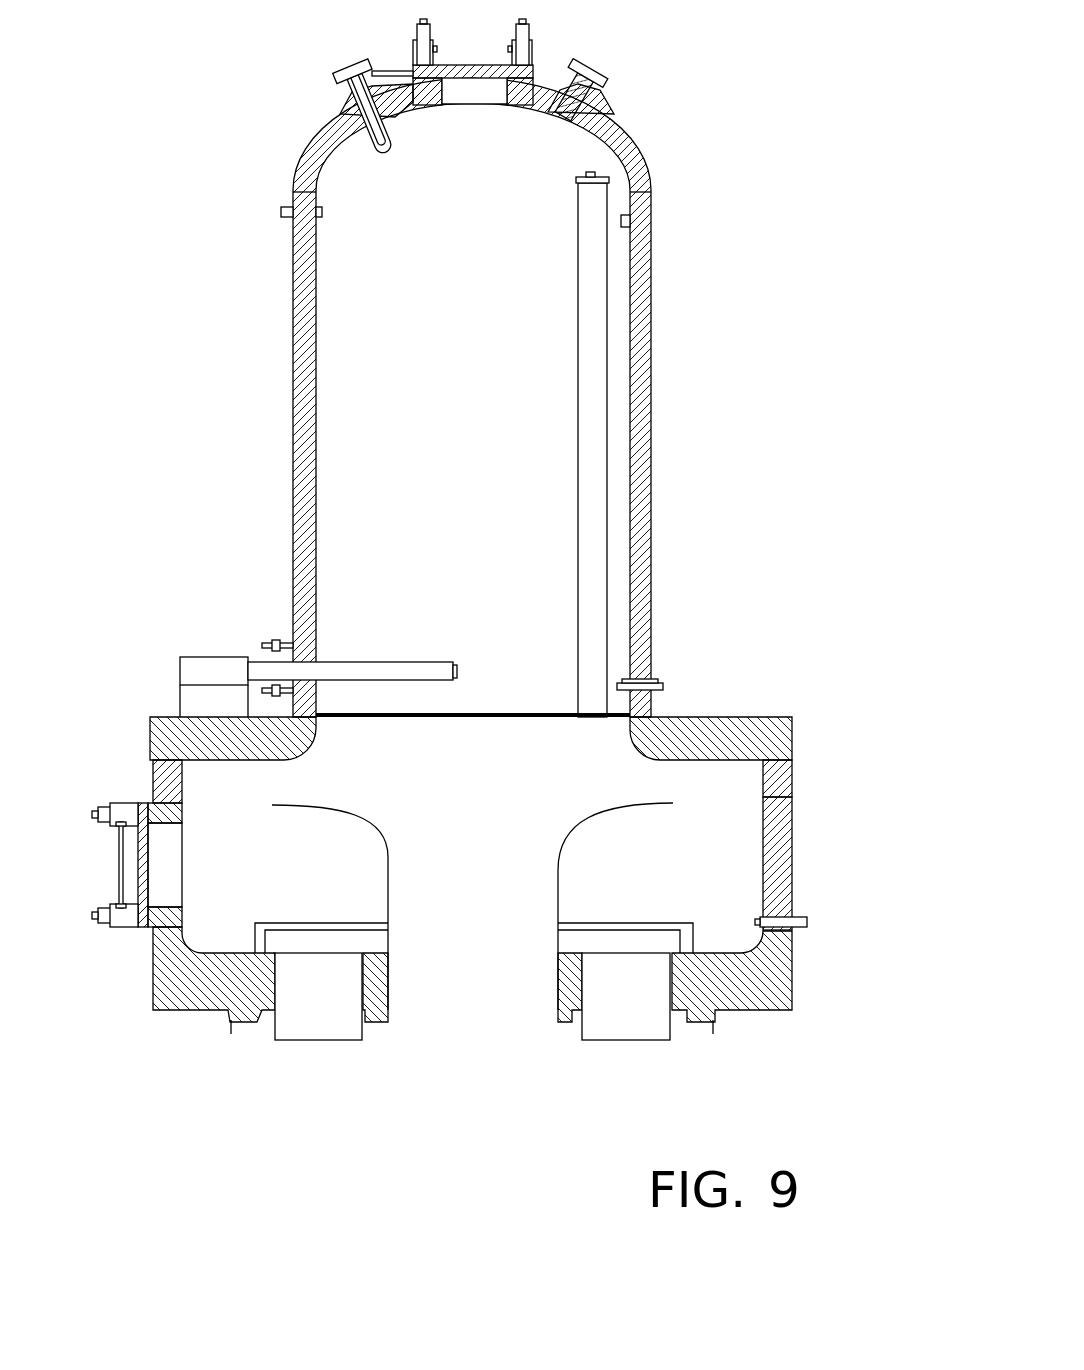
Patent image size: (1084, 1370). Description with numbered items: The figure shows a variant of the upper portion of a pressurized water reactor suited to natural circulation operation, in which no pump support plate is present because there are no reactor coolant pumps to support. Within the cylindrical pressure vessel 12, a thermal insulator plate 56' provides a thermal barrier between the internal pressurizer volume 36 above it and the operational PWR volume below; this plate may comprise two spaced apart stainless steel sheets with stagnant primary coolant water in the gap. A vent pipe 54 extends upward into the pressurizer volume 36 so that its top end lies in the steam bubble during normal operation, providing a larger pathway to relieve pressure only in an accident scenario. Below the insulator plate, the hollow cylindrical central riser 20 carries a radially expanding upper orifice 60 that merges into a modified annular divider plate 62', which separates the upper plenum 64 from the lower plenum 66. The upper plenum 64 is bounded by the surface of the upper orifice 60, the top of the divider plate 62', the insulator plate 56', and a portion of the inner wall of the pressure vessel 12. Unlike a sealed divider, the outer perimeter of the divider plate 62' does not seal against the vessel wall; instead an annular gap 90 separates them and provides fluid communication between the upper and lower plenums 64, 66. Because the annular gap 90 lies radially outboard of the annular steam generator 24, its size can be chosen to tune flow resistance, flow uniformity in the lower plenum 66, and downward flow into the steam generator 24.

The pressure vessel 12 is at (792, 963).
The hollow cylindrical central riser 20 is at (486, 988).
The annular steam generator 24 is at (328, 1040).
The internal pressurizer volume 36 is at (459, 443).
The vent pipe 54 is at (575, 303).
The thermal insulator plate 56' is at (473, 639).
The radially expanding upper orifice 60 is at (330, 805).
The modified annular divider plate 62' is at (321, 907).
The upper plenum 64 is at (708, 797).
The lower plenum 66 is at (696, 882).
The annular gap 90 is at (263, 810).